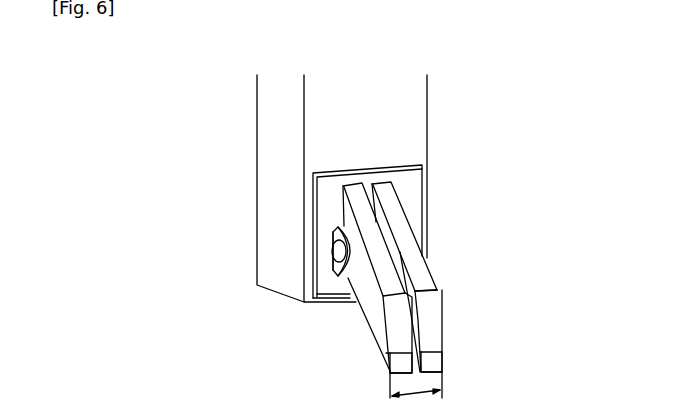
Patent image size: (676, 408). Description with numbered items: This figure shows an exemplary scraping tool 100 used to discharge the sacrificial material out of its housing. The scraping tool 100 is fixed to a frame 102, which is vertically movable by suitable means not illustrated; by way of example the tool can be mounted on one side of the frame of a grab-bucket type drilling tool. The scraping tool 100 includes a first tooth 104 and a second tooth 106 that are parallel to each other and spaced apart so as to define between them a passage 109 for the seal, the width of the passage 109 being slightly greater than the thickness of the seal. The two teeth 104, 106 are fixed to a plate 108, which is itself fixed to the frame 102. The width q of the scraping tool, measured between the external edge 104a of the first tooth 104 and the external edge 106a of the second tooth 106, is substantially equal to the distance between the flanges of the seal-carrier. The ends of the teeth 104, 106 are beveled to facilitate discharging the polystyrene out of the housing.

The scraping tool 100 is at (478, 140).
The frame 102 is at (418, 101).
The first tooth 104 is at (430, 320).
The external edge of the first tooth 104a is at (383, 349).
The second tooth 106 is at (395, 330).
The external edge of the second tooth 106a is at (443, 340).
The plate 108 is at (413, 180).
The passage 109 is at (415, 291).